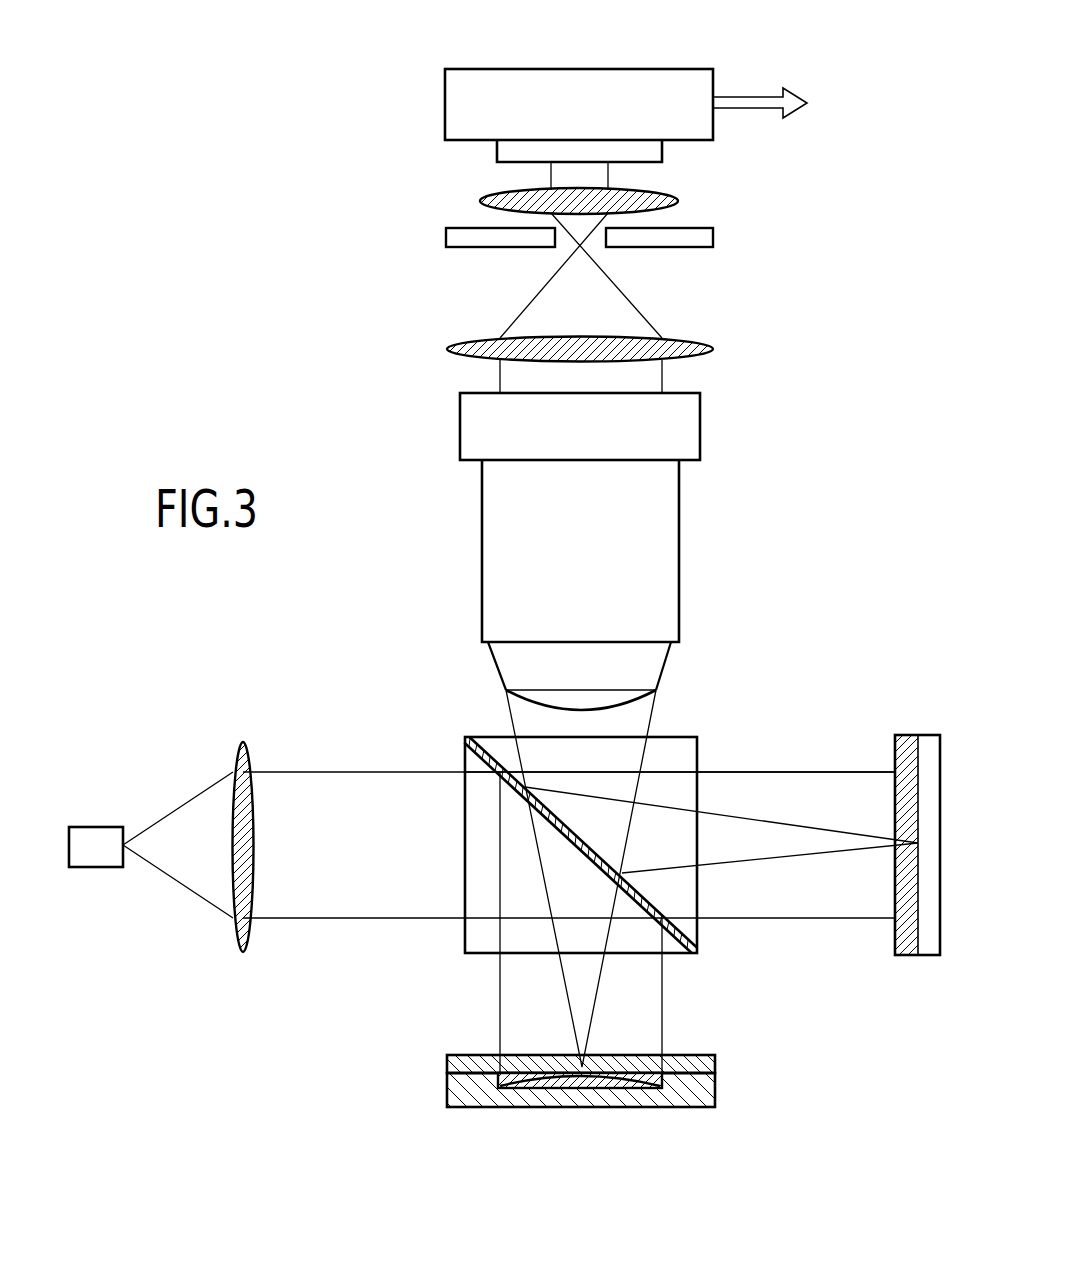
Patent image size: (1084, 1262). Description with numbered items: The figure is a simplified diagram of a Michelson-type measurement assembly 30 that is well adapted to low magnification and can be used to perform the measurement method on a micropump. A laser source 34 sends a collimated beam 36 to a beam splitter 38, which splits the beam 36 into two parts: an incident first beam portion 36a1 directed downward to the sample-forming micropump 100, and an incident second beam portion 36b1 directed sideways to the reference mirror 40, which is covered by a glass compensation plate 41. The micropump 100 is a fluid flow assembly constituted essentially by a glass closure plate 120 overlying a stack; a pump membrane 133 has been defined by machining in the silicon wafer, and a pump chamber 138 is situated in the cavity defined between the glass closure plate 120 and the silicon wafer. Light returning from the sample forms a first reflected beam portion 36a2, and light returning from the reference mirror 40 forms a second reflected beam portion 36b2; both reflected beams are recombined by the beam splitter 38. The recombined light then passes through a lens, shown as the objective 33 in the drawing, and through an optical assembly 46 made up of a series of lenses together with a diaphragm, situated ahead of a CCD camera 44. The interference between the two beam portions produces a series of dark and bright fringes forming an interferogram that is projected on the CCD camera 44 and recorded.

The measurement assembly 30 is at (345, 310).
The CCD camera 44 is at (484, 100).
The optical assembly 46 is at (732, 180).
The objective 33 is at (663, 545).
The laser source 34 is at (100, 840).
The collimated beam 36 is at (372, 795).
The beam splitter 38 is at (697, 938).
The incident second beam portion 36b1 is at (812, 770).
The second reflected beam portion 36b2 is at (744, 816).
The glass compensation plate 41 is at (908, 745).
The reference mirror 40 is at (925, 945).
The incident first beam portion 36a1 is at (663, 1002).
The first reflected beam portion 36a2 is at (563, 987).
The micropump 100 is at (636, 1101).
The glass closure plate 120 is at (715, 1062).
The pump membrane 133 is at (555, 1090).
The pump chamber 138 is at (645, 1107).